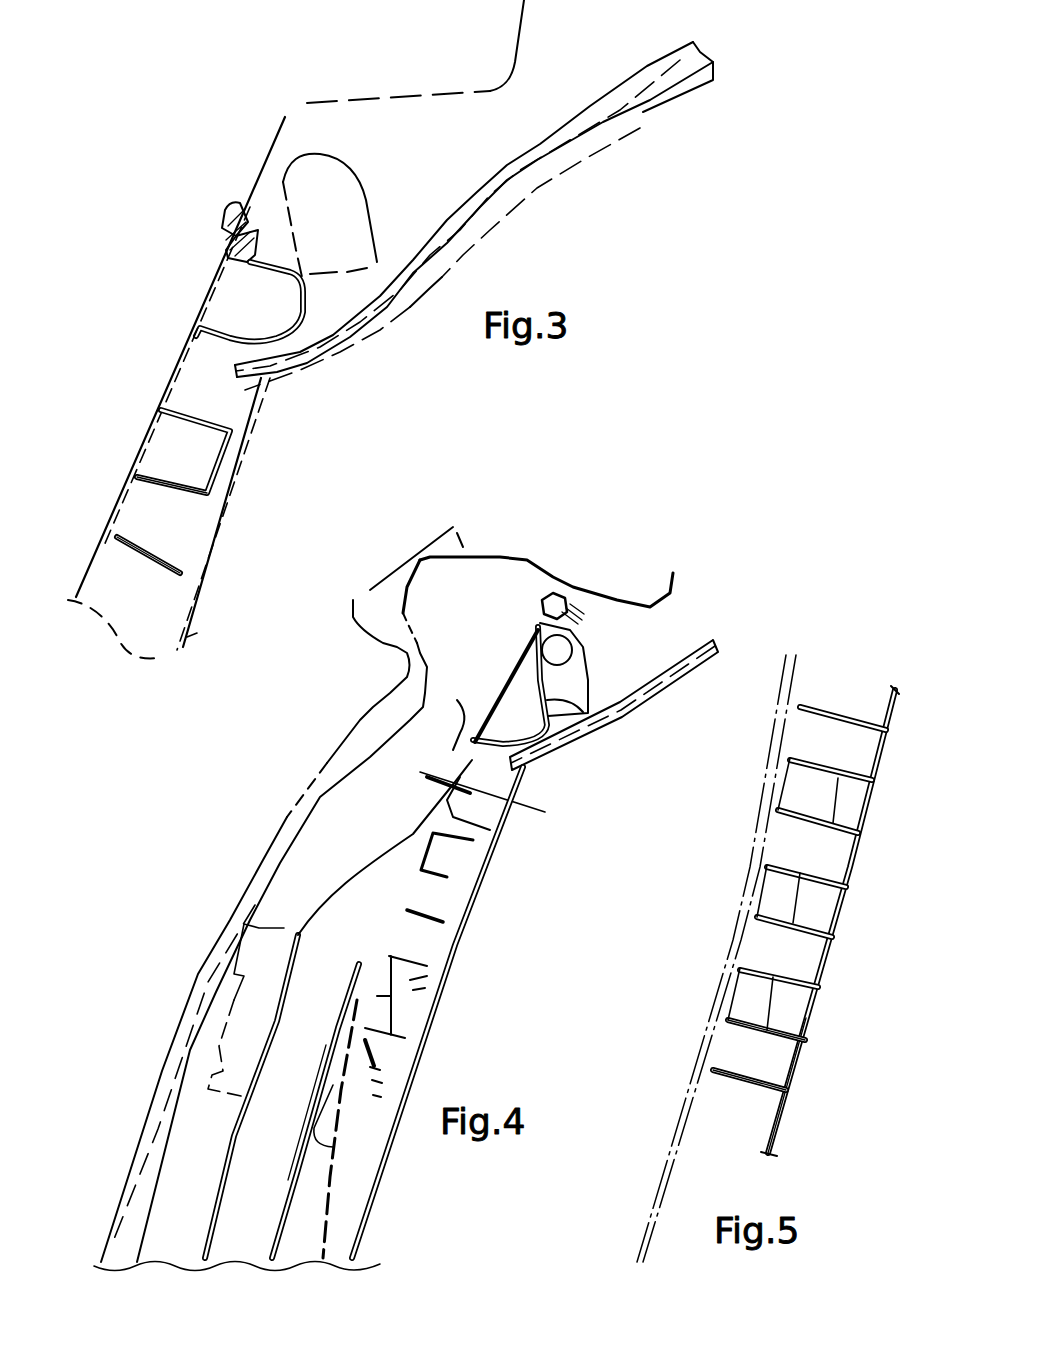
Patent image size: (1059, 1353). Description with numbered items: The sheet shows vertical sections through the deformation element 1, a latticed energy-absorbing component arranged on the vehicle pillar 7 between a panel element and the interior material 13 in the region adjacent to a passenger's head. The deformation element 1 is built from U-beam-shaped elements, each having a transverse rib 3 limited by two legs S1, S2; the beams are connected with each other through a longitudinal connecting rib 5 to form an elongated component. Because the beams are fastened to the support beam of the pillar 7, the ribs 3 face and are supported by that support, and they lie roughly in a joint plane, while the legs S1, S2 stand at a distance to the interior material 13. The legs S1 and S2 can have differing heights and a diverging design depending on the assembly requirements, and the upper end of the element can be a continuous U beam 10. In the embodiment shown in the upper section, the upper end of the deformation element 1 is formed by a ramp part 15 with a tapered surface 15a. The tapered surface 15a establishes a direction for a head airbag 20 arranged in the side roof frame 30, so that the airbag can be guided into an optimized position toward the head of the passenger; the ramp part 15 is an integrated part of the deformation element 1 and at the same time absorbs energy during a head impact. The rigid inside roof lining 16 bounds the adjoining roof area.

In FIG. 3, the deformation element 1 is at (265, 478).
In FIG. 5, the deformation element 1 is at (855, 943).
In FIG. 3, the transverse rib 3 is at (124, 487).
In FIG. 3, the longitudinal connecting rib 5 is at (177, 437).
In FIG. 5, the longitudinal connecting rib 5 is at (774, 787).
In FIG. 3, the pillar 7 is at (88, 556).
In FIG. 5, the pillar 7 is at (779, 1131).
In FIG. 4, the continuous U beam 10 is at (462, 882).
In FIG. 3, the interior material 13 is at (207, 603).
In FIG. 4, the interior material 13 is at (467, 972).
In FIG. 5, the interior material 13 is at (650, 1203).
In FIG. 3, the ramp part 15 is at (307, 323).
In FIG. 4, the ramp part 15 is at (543, 725).
In FIG. 3, the tapered surface 15a is at (310, 300).
In FIG. 4, the tapered surface 15a is at (583, 712).
In FIG. 3, the rigid inside roof lining 16 is at (595, 156).
In FIG. 4, the rigid inside roof lining 16 is at (692, 690).
In FIG. 3, the head airbag 20 is at (310, 145).
In FIG. 4, the head airbag 20 is at (600, 677).
In FIG. 4, the side roof frame 30 is at (620, 595).
In FIG. 3, the leg S1 is at (150, 565).
In FIG. 5, the leg S1 is at (773, 1037).
In FIG. 3, the leg S2 is at (187, 490).
In FIG. 5, the leg S2 is at (733, 1080).